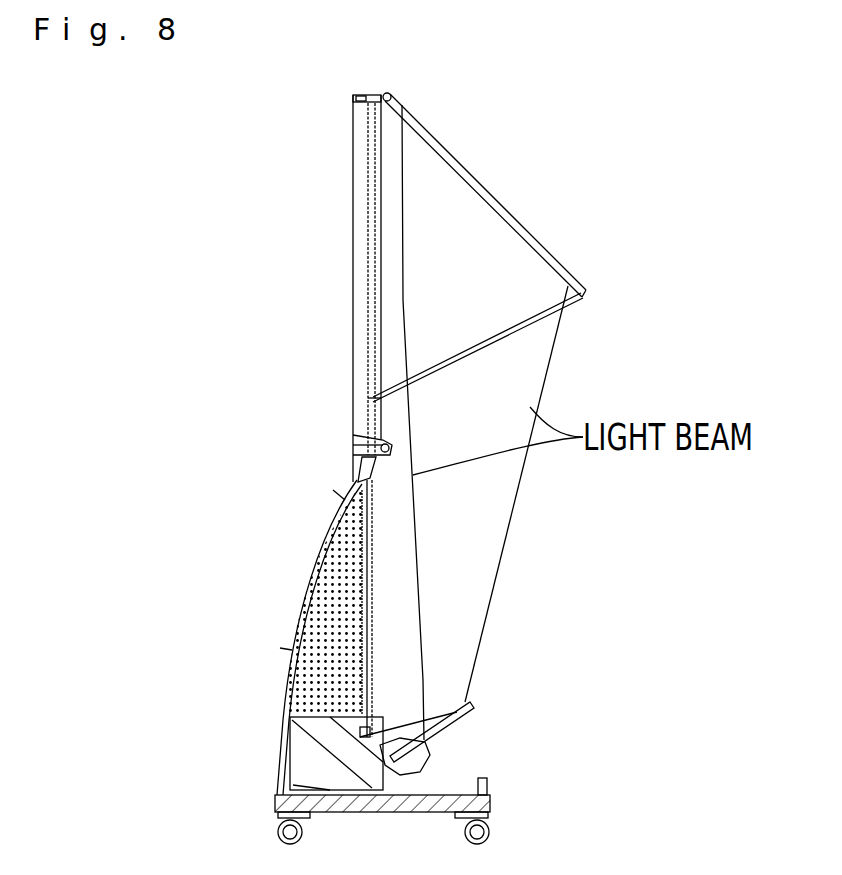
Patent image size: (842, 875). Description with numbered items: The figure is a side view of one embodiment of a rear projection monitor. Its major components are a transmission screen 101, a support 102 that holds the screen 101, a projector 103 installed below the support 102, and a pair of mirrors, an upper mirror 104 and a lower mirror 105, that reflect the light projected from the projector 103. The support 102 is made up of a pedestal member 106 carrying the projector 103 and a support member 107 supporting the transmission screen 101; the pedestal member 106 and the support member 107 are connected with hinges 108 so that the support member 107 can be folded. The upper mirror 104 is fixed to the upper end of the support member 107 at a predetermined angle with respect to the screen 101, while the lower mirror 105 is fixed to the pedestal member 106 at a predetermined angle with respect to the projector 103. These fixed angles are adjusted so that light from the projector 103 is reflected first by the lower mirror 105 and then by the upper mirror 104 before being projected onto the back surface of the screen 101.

The transmission screen 101 is at (358, 202).
The support 102 is at (190, 573).
The projector 103 is at (278, 747).
The upper mirror 104 is at (440, 157).
The lower mirror 105 is at (437, 723).
The pedestal member 106 is at (307, 592).
The support member 107 is at (353, 141).
The hinges 108 is at (385, 447).